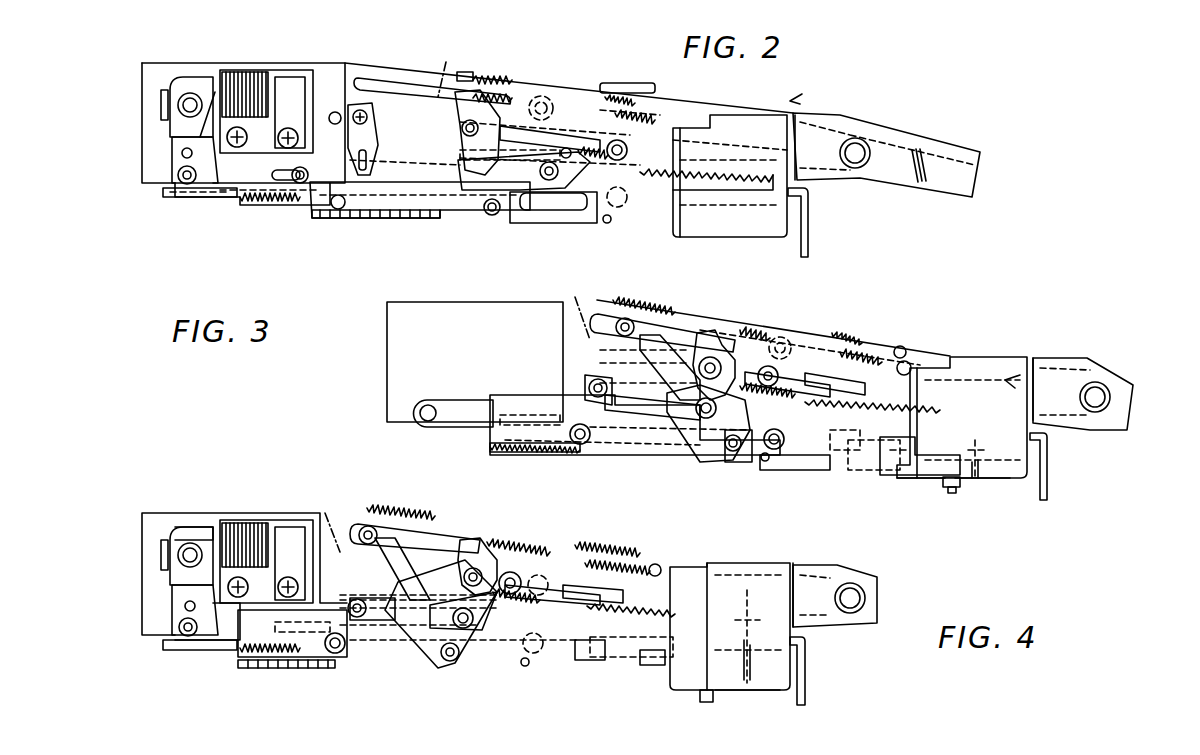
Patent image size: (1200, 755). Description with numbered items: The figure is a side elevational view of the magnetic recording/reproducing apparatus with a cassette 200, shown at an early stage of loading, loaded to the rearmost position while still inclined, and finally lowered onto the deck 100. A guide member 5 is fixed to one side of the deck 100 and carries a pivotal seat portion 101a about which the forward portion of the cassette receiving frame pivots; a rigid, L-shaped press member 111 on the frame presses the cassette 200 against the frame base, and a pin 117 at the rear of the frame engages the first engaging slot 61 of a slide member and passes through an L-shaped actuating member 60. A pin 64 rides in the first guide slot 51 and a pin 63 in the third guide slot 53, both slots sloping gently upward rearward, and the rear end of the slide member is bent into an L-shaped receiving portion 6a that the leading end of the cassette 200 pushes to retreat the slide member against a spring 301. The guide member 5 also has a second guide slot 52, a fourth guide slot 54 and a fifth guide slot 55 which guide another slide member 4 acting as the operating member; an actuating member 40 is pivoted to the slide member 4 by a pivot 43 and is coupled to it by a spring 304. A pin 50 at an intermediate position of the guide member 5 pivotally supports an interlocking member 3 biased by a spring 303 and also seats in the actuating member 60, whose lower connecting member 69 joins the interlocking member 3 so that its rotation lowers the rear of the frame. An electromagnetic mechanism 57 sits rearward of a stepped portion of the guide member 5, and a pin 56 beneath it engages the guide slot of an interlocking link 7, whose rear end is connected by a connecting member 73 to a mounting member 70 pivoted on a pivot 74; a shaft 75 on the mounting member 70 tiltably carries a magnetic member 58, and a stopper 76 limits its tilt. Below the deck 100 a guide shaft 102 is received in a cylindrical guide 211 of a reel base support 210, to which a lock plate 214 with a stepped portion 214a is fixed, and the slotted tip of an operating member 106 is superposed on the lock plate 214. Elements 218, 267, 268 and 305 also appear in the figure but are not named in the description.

In FIG. 2, the interlocking member 3 is at (470, 191).
In FIG. 3, the interlocking member 3 is at (716, 463).
In FIG. 4, the interlocking member 3 is at (405, 655).
In FIG. 2, the slide member 4 is at (420, 212).
In FIG. 3, the slide member 4 is at (610, 446).
In FIG. 4, the slide member 4 is at (331, 658).
In FIG. 2, the guide member 5 is at (729, 225).
In FIG. 3, the guide member 5 is at (962, 366).
In FIG. 4, the guide member 5 is at (712, 576).
In FIG. 2, the L-shaped receiving portion 6a is at (449, 70).
In FIG. 3, the L-shaped receiving portion 6a is at (577, 309).
In FIG. 4, the L-shaped receiving portion 6a is at (324, 523).
In FIG. 2, the interlocking link 7 is at (228, 190).
In FIG. 3, the interlocking link 7 is at (458, 418).
In FIG. 4, the interlocking link 7 is at (222, 641).
In FIG. 2, the actuating member 40 is at (487, 125).
In FIG. 3, the actuating member 40 is at (640, 421).
In FIG. 4, the actuating member 40 is at (380, 622).
In FIG. 2, the pivot 43 is at (606, 224).
In FIG. 3, the pivot 43 is at (699, 370).
In FIG. 4, the pivot 43 is at (490, 640).
In FIG. 2, the pin 50 is at (470, 72).
In FIG. 3, the pin 50 is at (726, 345).
In FIG. 4, the pin 50 is at (470, 540).
In FIG. 2, the first guide slot 51 is at (562, 137).
In FIG. 3, the first guide slot 51 is at (852, 380).
In FIG. 4, the first guide slot 51 is at (640, 560).
In FIG. 2, the second guide slot 52 is at (560, 211).
In FIG. 3, the second guide slot 52 is at (650, 335).
In FIG. 4, the second guide slot 52 is at (385, 538).
In FIG. 2, the third guide slot 53 is at (396, 78).
In FIG. 3, the third guide slot 53 is at (665, 312).
In FIG. 4, the third guide slot 53 is at (411, 508).
In FIG. 2, the fourth guide slot 54 is at (443, 105).
In FIG. 3, the fourth guide slot 54 is at (590, 382).
In FIG. 2, the fifth guide slot 55 is at (341, 208).
In FIG. 3, the fifth guide slot 55 is at (600, 441).
In FIG. 4, the fifth guide slot 55 is at (345, 650).
In FIG. 2, the pin 56 is at (302, 184).
In FIG. 2, the electromagnetic mechanism 57 is at (256, 72).
In FIG. 4, the electromagnetic mechanism 57 is at (249, 522).
In FIG. 4, the magnetic member 58 is at (196, 527).
In FIG. 2, the L-shaped actuating member 60 is at (490, 215).
In FIG. 3, the L-shaped actuating member 60 is at (705, 419).
In FIG. 3, the first engaging slot 61 is at (706, 340).
In FIG. 4, the first engaging slot 61 is at (466, 568).
In FIG. 3, the pin 63 is at (625, 318).
In FIG. 4, the pin 63 is at (360, 525).
In FIG. 2, the pin 64 is at (617, 140).
In FIG. 3, the pin 64 is at (774, 451).
In FIG. 4, the pin 64 is at (510, 595).
In FIG. 2, the connecting member 69 is at (545, 181).
In FIG. 3, the connecting member 69 is at (739, 452).
In FIG. 4, the connecting member 69 is at (450, 661).
In FIG. 2, the magnetic member mounting member 70 is at (185, 138).
In FIG. 4, the magnetic member mounting member 70 is at (182, 600).
In FIG. 2, the connecting member 73 is at (188, 190).
In FIG. 4, the connecting member 73 is at (190, 646).
In FIG. 2, the pivot 74 is at (182, 154).
In FIG. 4, the pivot 74 is at (183, 625).
In FIG. 2, the shaft 75 is at (190, 92).
In FIG. 4, the shaft 75 is at (185, 545).
In FIG. 2, the stopper 76 is at (161, 100).
In FIG. 4, the stopper 76 is at (161, 551).
In FIG. 2, the deck 100 is at (808, 226).
In FIG. 3, the deck 100 is at (1047, 456).
In FIG. 4, the deck 100 is at (806, 662).
In FIG. 2, the pivotal seat portion 101a is at (862, 142).
In FIG. 3, the pivotal seat portion 101a is at (1103, 384).
In FIG. 3, the guide shaft 102 is at (962, 486).
In FIG. 4, the guide shaft 102 is at (705, 702).
In FIG. 3, the operating member 106 is at (918, 446).
In FIG. 2, the rigid press member 111 is at (656, 90).
In FIG. 2, the pin 117 is at (560, 97).
In FIG. 3, the pin 117 is at (784, 345).
In FIG. 4, the pin 117 is at (548, 582).
In FIG. 2, the cassette 200 is at (958, 195).
In FIG. 3, the cassette 200 is at (1133, 410).
In FIG. 4, the cassette 200 is at (860, 582).
In FIG. 3, the reel base support 210 is at (935, 482).
In FIG. 4, the reel base support 210 is at (765, 690).
In FIG. 3, the cylindrical guide 211 is at (962, 487).
In FIG. 3, the lock plate 214 is at (980, 466).
In FIG. 4, the lock plate 214 is at (750, 636).
In FIG. 4, the stepped portion 214a is at (650, 666).
In FIG. 3, the plate 218 is at (890, 471).
In FIG. 4, the plate 218 is at (556, 660).
In FIG. 2, the rack 267 is at (382, 218).
In FIG. 3, the rack 267 is at (538, 452).
In FIG. 4, the rack 267 is at (278, 668).
In FIG. 2, the rack teeth 268 is at (716, 170).
In FIG. 3, the rack teeth 268 is at (905, 405).
In FIG. 4, the rack teeth 268 is at (640, 604).
In FIG. 2, the spring 301 is at (625, 97).
In FIG. 3, the spring 301 is at (846, 334).
In FIG. 4, the spring 301 is at (605, 546).
In FIG. 2, the spring 303 is at (522, 88).
In FIG. 3, the spring 303 is at (762, 330).
In FIG. 4, the spring 303 is at (483, 540).
In FIG. 2, the spring 304 is at (600, 222).
In FIG. 3, the spring 304 is at (797, 471).
In FIG. 4, the spring 304 is at (533, 575).
In FIG. 2, the spring 305 is at (270, 200).
In FIG. 4, the spring 305 is at (250, 655).